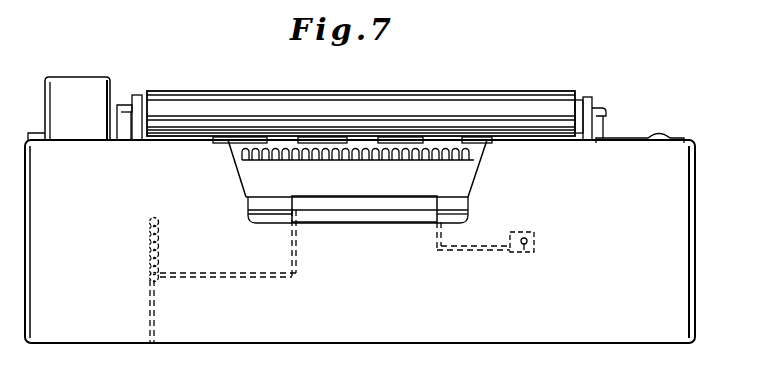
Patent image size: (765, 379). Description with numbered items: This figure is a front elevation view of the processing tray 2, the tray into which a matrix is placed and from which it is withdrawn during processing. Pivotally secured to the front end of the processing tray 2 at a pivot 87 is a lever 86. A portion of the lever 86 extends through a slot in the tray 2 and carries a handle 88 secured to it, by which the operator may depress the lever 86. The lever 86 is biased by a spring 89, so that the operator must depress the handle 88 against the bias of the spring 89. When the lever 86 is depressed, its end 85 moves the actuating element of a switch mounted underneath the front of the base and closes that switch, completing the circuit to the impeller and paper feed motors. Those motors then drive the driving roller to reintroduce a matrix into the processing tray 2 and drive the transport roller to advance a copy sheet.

The processing tray 2 is at (493, 334).
The end of lever 85 is at (158, 335).
The lever 86 is at (264, 278).
The pivot 87 is at (525, 252).
The handle 88 is at (353, 205).
The spring 89 is at (163, 258).